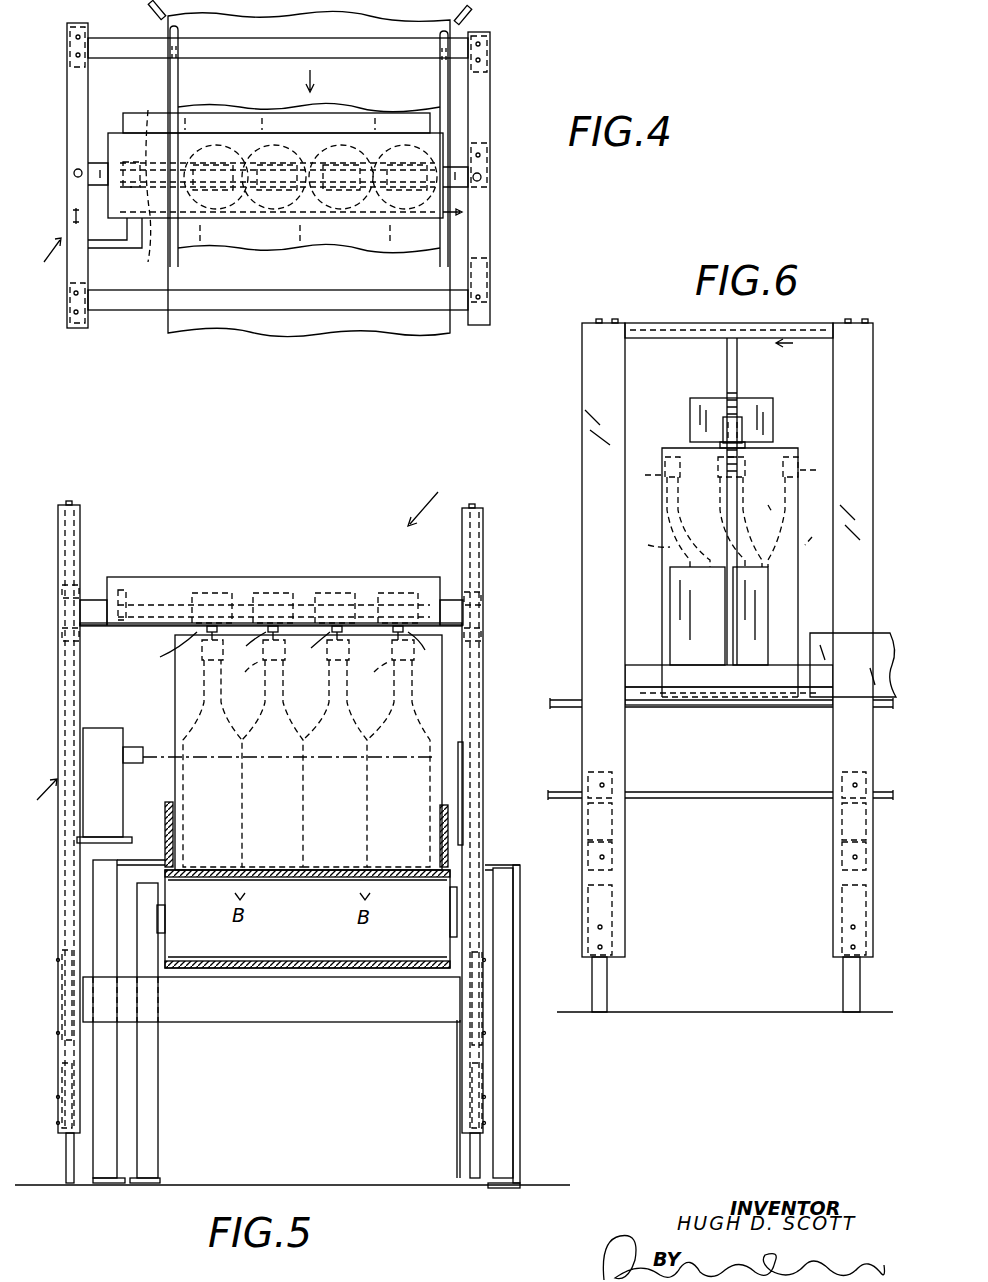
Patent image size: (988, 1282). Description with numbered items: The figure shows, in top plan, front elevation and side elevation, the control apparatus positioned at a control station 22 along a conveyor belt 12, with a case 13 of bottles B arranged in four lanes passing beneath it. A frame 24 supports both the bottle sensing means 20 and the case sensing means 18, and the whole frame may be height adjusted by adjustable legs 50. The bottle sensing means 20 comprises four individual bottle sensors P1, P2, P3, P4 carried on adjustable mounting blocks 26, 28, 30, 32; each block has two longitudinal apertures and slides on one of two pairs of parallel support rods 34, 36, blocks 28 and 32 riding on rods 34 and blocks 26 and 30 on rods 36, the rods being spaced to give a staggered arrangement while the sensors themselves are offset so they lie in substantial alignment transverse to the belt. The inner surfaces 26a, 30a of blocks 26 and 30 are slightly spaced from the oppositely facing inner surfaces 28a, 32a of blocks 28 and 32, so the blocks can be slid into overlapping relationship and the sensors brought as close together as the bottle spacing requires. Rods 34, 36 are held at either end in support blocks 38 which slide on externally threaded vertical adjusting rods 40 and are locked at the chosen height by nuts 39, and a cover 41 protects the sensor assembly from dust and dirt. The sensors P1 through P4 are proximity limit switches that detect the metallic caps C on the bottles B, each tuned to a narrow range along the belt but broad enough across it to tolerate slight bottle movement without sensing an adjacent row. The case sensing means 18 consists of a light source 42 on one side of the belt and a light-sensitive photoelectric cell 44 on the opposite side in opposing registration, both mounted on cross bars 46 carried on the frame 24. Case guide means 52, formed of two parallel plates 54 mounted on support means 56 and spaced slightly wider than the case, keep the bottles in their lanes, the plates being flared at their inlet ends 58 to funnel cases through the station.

In FIG. 4, the conveyor belt 12 is at (292, 312).
In FIG. 5, the conveyor belt 12 is at (243, 970).
In FIG. 6, the conveyor belt 12 is at (740, 705).
In FIG. 4, the case 13 is at (435, 116).
In FIG. 5, the case 13 is at (443, 722).
In FIG. 6, the case 13 is at (795, 450).
In FIG. 4, the case sensing means 18 is at (43, 258).
In FIG. 5, the case sensing means 18 is at (41, 799).
In FIG. 5, the bottle sensing means 20 is at (432, 499).
In FIG. 5, the control station 22 is at (430, 798).
In FIG. 6, the control station 22 is at (824, 620).
In FIG. 4, the frame 24 is at (67, 113).
In FIG. 5, the frame 24 is at (485, 668).
In FIG. 6, the frame 24 is at (610, 494).
In FIG. 4, the mounting block 26 is at (408, 222).
In FIG. 5, the mounting block 26 is at (398, 592).
In FIG. 4, the inner surface 26a is at (402, 222).
In FIG. 4, the mounting block 28 is at (342, 222).
In FIG. 5, the mounting block 28 is at (337, 592).
In FIG. 4, the inner surface 28a is at (350, 163).
In FIG. 4, the mounting block 30 is at (284, 222).
In FIG. 5, the mounting block 30 is at (273, 592).
In FIG. 4, the inner surface 30a is at (270, 220).
In FIG. 4, the mounting block 32 is at (216, 220).
In FIG. 5, the mounting block 32 is at (212, 592).
In FIG. 4, the inner surface 32a is at (226, 162).
In FIG. 4, the support rods 34 is at (152, 192).
In FIG. 5, the support rods 34 is at (131, 592).
In FIG. 4, the support rods 36 is at (156, 134).
In FIG. 4, the support blocks 38 is at (96, 163).
In FIG. 5, the support blocks 38 is at (90, 600).
In FIG. 6, the support blocks 38 is at (723, 430).
In FIG. 5, the nuts 39 is at (62, 594).
In FIG. 6, the nuts 39 is at (745, 444).
In FIG. 4, the vertical adjusting rods 40 is at (73, 174).
In FIG. 5, the vertical adjusting rods 40 is at (62, 684).
In FIG. 6, the vertical adjusting rods 40 is at (740, 376).
In FIG. 5, the cover 41 is at (184, 578).
In FIG. 6, the cover 41 is at (706, 400).
In FIG. 4, the light source 42 is at (112, 242).
In FIG. 5, the light source 42 is at (108, 733).
In FIG. 5, the photoelectric cell 44 is at (463, 786).
In FIG. 6, the cross bars 46 is at (652, 705).
In FIG. 5, the adjustable legs 50 is at (66, 1151).
In FIG. 6, the adjustable legs 50 is at (607, 992).
In FIG. 5, the case guide means 52 is at (531, 1044).
In FIG. 4, the parallel plates 54 is at (172, 66).
In FIG. 5, the parallel plates 54 is at (165, 810).
In FIG. 6, the parallel plates 54 is at (880, 640).
In FIG. 5, the support means 56 is at (96, 892).
In FIG. 4, the inlet ends 58 is at (148, 9).
In FIG. 6, the bottles B is at (728, 521).
In FIG. 5, the metallic caps C is at (309, 674).
In FIG. 6, the metallic caps C is at (732, 475).
In FIG. 5, the bottle sensor P1 is at (425, 653).
In FIG. 5, the bottle sensor P2 is at (311, 649).
In FIG. 5, the bottle sensor P3 is at (247, 648).
In FIG. 5, the bottle sensor P4 is at (167, 652).